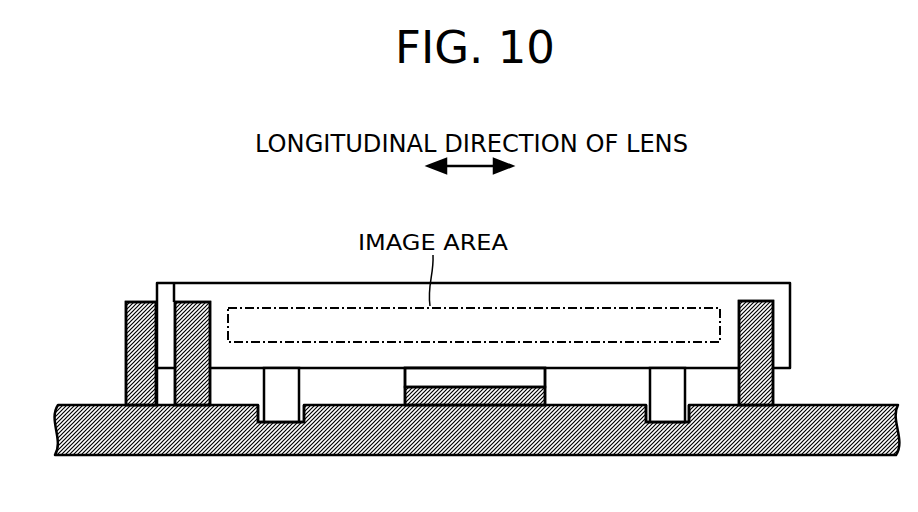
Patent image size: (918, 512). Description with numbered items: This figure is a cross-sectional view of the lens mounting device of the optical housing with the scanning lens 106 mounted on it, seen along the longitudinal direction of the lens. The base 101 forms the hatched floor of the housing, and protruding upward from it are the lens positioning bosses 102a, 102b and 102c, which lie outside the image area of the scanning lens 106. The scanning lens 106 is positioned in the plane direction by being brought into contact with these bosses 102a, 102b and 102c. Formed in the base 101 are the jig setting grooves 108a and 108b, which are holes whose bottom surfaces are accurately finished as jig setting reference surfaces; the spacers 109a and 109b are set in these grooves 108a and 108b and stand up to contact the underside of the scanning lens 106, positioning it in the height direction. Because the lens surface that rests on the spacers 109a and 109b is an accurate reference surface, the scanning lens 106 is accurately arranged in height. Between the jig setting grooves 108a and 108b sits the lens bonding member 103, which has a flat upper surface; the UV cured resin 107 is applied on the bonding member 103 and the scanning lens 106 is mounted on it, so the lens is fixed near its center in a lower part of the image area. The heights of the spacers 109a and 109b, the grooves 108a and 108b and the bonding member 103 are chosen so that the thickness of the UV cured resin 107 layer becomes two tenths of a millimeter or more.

The base 101 is at (838, 410).
The lens positioning boss 102a is at (752, 310).
The lens positioning boss 102b is at (190, 300).
The lens positioning boss 102c is at (132, 333).
The lens bonding member 103 is at (537, 397).
The scanning lens 106 is at (614, 290).
The UV cured resin 107 is at (512, 377).
The jig setting groove 108a is at (693, 412).
The jig setting groove 108b is at (256, 413).
The spacer 109a is at (668, 375).
The spacer 109b is at (296, 393).